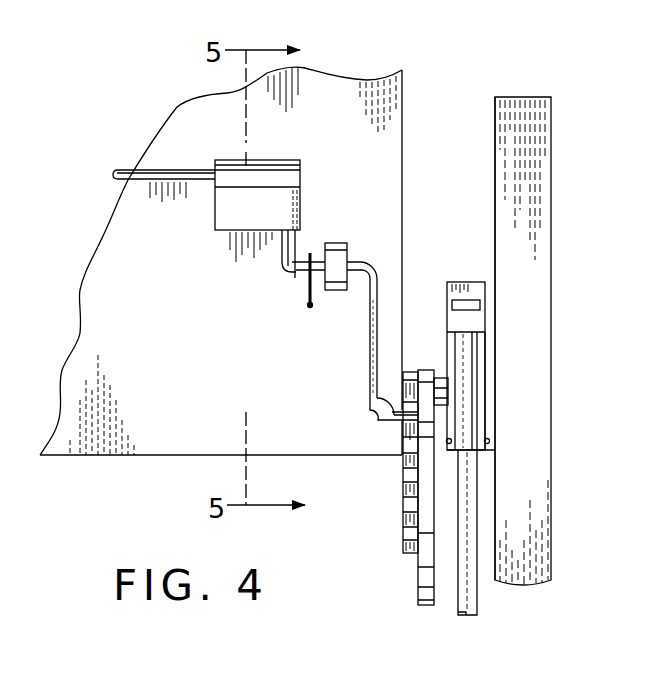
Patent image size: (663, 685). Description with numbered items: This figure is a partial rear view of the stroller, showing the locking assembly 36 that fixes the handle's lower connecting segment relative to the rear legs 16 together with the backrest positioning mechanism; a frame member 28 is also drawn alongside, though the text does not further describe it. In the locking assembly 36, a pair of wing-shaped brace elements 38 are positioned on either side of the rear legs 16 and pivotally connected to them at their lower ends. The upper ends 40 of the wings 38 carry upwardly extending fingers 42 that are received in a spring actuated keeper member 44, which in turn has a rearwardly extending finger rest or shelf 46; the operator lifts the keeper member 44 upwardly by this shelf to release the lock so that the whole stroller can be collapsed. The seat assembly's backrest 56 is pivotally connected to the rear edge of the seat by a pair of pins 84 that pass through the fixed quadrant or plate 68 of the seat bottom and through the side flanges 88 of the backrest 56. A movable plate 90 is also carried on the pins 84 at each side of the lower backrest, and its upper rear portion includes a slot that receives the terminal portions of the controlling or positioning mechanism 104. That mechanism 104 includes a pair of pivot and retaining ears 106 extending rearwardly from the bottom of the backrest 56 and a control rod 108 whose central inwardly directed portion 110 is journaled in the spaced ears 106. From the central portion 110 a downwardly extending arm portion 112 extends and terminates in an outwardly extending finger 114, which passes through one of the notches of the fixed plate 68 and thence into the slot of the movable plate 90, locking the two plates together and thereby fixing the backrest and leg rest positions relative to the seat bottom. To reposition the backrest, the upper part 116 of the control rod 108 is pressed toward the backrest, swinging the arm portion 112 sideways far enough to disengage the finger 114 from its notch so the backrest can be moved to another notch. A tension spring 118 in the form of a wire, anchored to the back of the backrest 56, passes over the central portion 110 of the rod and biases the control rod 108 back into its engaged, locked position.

The rear legs 16 is at (466, 598).
The frame member 28 is at (527, 97).
The locking assembly 36 is at (492, 451).
The wing-shaped brace elements 38 is at (482, 383).
The upper ends of the wings 40 is at (480, 343).
The upwardly extending fingers 42 is at (450, 347).
The keeper member 44 is at (470, 317).
The finger rest or shelf 46 is at (473, 300).
The backrest portion 56 is at (311, 100).
The fixed quadrant or plate 68 is at (405, 508).
The pins 84 is at (436, 392).
The side flanges 88 is at (406, 87).
The movable plate 90 is at (422, 605).
The controlling or positioning mechanism 104 is at (213, 212).
The pivot and retaining ears 106 is at (333, 243).
The control rod 108 is at (368, 324).
The central inwardly directed portion 110 is at (358, 263).
The downwardly extending arm portion 112 is at (377, 362).
The outwardly extending finger 114 is at (392, 425).
The upper part of the control rod 116 is at (133, 170).
The tension spring 118 is at (308, 287).